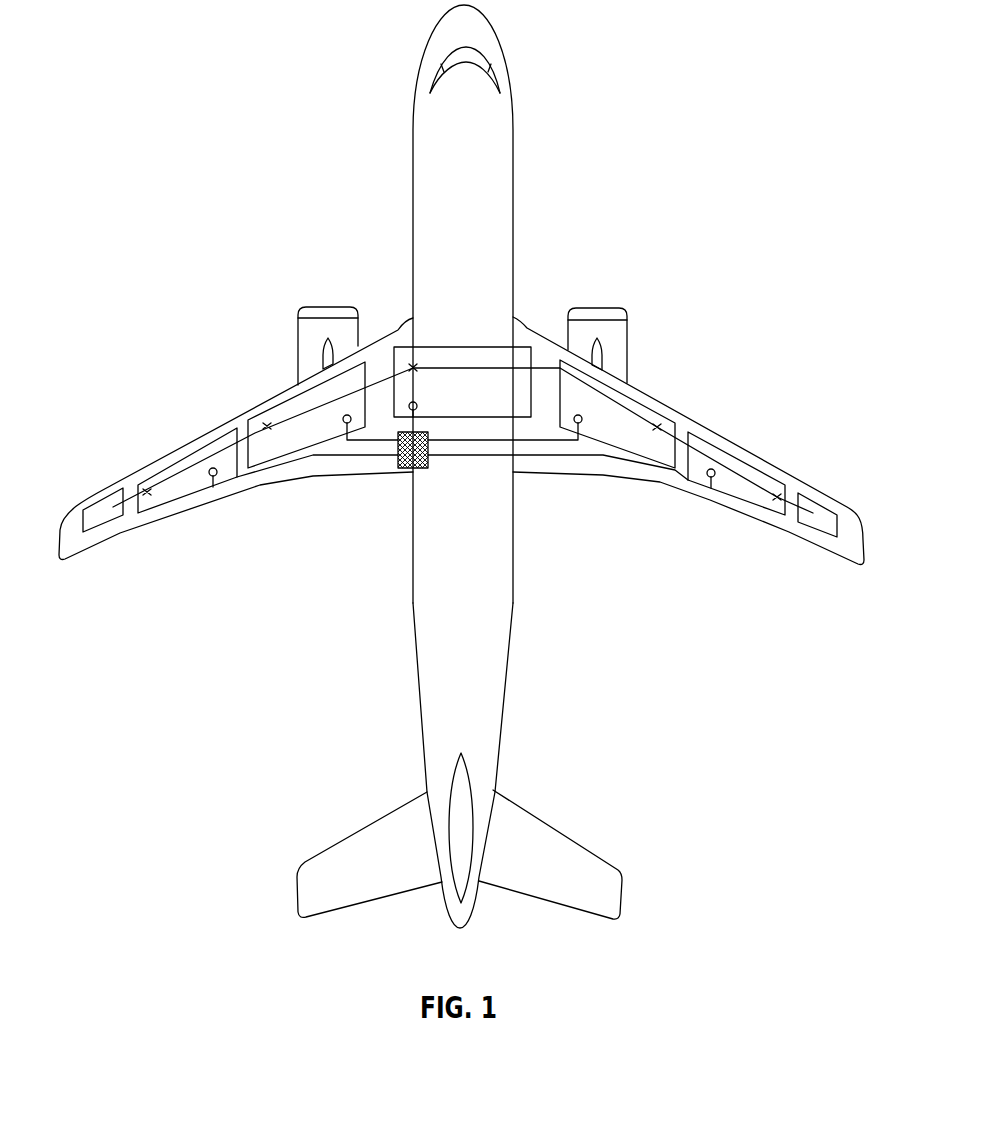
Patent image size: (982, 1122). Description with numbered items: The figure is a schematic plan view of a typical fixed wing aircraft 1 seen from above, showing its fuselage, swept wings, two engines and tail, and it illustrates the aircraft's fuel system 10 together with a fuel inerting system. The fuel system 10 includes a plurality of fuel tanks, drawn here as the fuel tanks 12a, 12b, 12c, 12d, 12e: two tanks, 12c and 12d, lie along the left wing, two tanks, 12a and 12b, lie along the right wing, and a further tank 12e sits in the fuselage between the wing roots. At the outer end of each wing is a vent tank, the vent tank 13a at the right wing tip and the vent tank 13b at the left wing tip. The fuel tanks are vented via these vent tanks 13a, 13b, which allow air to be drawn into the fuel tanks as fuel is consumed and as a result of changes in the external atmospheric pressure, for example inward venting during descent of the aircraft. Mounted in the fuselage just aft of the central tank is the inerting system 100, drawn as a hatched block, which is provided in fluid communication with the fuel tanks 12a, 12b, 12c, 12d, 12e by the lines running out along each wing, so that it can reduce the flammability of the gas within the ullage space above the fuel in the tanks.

The fixed wing aircraft 1 is at (461, 466).
The fuel system 10 is at (657, 347).
The fuel tank 12a is at (671, 416).
The fuel tank 12b is at (745, 458).
The fuel tank 12c is at (283, 400).
The fuel tank 12d is at (178, 457).
The fuel tank 12e is at (522, 345).
The vent tank 13a is at (820, 531).
The vent tank 13b is at (95, 531).
The inerting system 100 is at (405, 468).